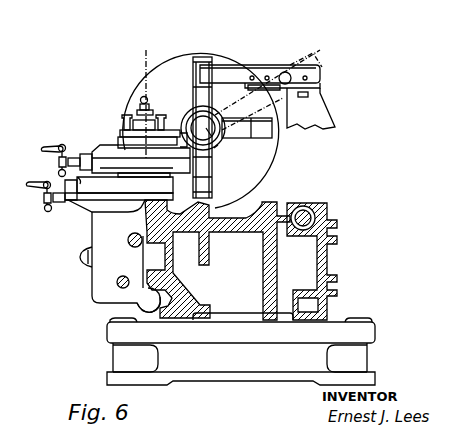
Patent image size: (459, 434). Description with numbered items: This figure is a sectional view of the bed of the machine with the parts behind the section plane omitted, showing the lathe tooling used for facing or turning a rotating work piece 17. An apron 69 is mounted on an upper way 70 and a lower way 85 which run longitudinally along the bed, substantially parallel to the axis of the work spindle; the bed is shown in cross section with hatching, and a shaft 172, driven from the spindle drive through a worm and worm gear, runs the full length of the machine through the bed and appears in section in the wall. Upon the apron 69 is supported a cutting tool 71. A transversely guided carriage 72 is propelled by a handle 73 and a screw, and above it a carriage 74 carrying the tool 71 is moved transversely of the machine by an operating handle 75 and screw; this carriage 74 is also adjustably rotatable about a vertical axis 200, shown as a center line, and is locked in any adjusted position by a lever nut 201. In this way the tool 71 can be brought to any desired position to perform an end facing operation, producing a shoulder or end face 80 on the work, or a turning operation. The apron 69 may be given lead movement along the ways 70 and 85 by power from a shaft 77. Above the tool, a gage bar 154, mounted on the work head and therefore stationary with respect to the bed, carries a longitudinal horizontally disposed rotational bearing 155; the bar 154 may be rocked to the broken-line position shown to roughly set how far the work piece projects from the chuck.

The work piece 17 is at (221, 143).
The apron 69 is at (113, 265).
The upper way 70 is at (134, 300).
The cutting tool 71 is at (181, 112).
The transversely guided carriage 72 is at (72, 180).
The handle 73 is at (43, 200).
The carriage 74 is at (98, 145).
The operating handle 75 is at (61, 145).
The shaft 77 is at (117, 284).
The shoulder or end face 80 is at (217, 149).
The lower way 85 is at (143, 202).
The gage bar 154 is at (264, 67).
The rotational bearing 155 is at (290, 65).
The shaft 172 is at (302, 226).
The vertical axis 200 is at (147, 98).
The lever nut 201 is at (142, 97).